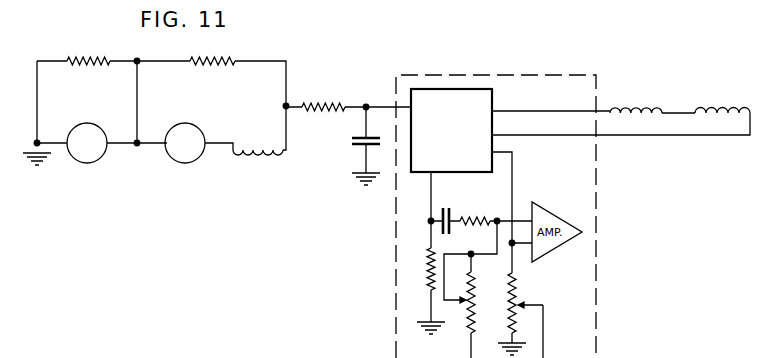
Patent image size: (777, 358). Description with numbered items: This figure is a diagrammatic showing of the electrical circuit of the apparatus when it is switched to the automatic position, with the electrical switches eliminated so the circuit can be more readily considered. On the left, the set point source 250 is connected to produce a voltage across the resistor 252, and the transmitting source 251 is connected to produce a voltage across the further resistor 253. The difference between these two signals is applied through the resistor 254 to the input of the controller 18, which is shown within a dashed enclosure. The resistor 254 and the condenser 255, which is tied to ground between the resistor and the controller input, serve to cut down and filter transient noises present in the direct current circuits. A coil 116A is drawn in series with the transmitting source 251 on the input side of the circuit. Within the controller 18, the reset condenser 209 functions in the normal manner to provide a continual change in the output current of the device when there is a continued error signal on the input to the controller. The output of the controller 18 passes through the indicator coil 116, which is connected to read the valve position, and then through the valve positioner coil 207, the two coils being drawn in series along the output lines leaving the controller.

The resistor 252 is at (92, 54).
The further resistor 253 is at (223, 54).
The resistor 254 is at (337, 103).
The condenser 255 is at (348, 141).
The set point source 250 is at (88, 164).
The transmitter source 251 is at (190, 163).
The coil 116A is at (267, 150).
The indicator coil 116 is at (642, 118).
The valve positioner coil 207 is at (730, 118).
The reset condenser 209 is at (447, 204).
The controller 18 is at (395, 260).